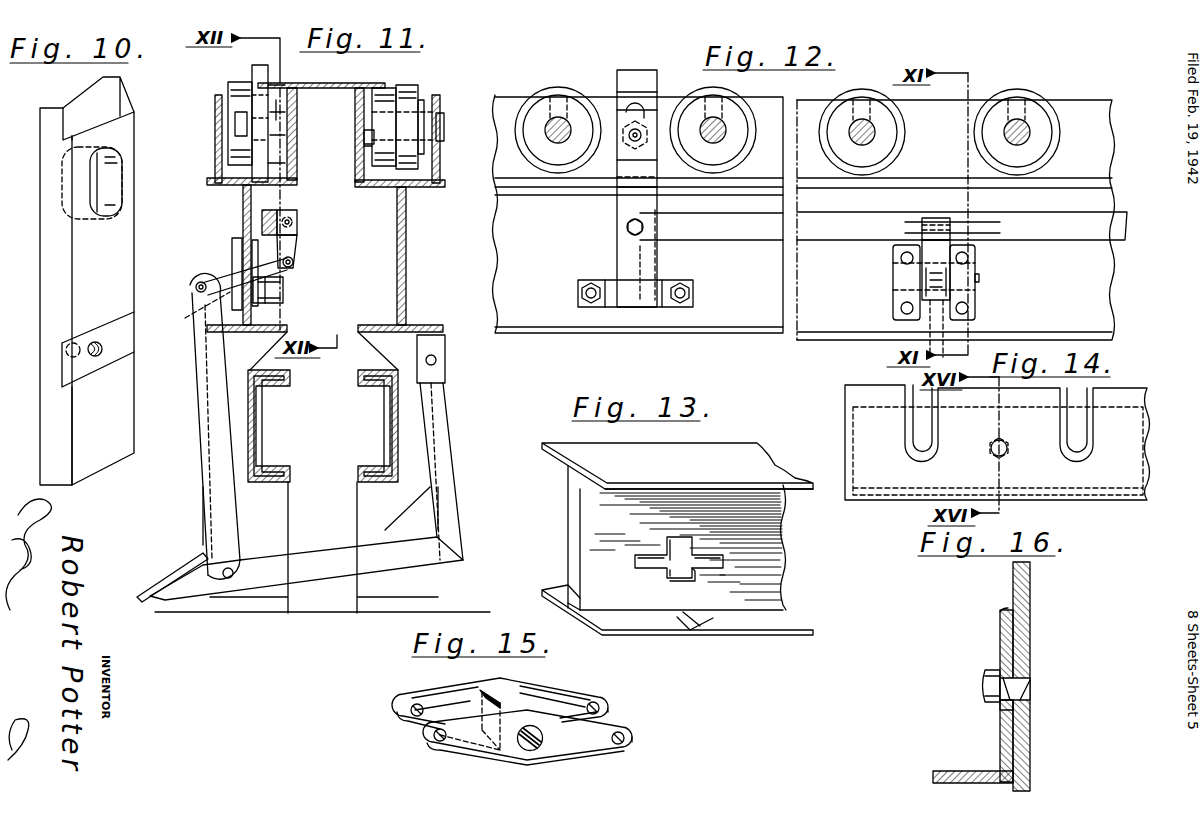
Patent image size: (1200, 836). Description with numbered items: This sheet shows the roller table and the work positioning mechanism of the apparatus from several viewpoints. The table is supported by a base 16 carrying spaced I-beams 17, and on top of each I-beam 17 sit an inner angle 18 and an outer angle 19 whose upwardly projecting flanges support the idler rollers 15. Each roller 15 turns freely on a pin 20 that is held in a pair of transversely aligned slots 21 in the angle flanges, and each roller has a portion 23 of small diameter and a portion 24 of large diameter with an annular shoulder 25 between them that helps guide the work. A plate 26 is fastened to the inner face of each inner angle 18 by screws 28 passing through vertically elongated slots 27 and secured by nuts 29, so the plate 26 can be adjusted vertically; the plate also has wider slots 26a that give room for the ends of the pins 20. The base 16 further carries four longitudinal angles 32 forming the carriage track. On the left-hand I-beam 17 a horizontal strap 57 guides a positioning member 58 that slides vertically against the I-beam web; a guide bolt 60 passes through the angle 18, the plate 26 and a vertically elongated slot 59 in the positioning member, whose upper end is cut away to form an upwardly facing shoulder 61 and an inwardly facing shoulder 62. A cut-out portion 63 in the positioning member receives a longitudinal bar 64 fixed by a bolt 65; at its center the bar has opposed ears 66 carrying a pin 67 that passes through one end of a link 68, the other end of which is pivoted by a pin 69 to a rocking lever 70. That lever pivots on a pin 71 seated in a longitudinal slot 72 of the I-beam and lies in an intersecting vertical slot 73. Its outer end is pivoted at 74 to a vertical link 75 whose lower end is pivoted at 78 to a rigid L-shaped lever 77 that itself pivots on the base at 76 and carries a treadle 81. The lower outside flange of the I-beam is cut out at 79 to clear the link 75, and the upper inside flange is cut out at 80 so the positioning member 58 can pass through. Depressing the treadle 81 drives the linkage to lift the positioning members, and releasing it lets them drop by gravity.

In FIG. 11, the idler roller 15 is at (420, 88).
In FIG. 12, the idler roller 15 is at (1017, 95).
In FIG. 11, the base 16 is at (357, 510).
In FIG. 11, the I-beam 17 is at (243, 214).
In FIG. 12, the I-beam 17 is at (544, 255).
In FIG. 13, the I-beam 17 is at (775, 523).
In FIG. 11, the inner angle 18 is at (293, 181).
In FIG. 14, the inner angle 18 is at (1145, 410).
In FIG. 16, the inner angle 18 is at (1000, 755).
In FIG. 11, the outer angle 19 is at (215, 162).
In FIG. 12, the outer angle 19 is at (1070, 100).
In FIG. 11, the pin 20 is at (444, 127).
In FIG. 12, the pin 20 is at (787, 142).
In FIG. 14, the slot 21 is at (920, 418).
In FIG. 11, the portion of relatively small diameter 23 is at (388, 88).
In FIG. 12, the portion of relatively small diameter 23 is at (1052, 128).
In FIG. 11, the portion of relatively great diameter 24 is at (409, 85).
In FIG. 12, the portion of relatively great diameter 24 is at (1060, 146).
In FIG. 11, the annular shoulder 25 is at (415, 78).
In FIG. 12, the annular shoulder 25 is at (1050, 160).
In FIG. 11, the plate 26 is at (298, 101).
In FIG. 14, the plate 26 is at (847, 393).
In FIG. 16, the plate 26 is at (1030, 731).
In FIG. 14, the vertically elongated slot 26a is at (905, 438).
In FIG. 11, the vertically elongated slot 27 is at (355, 148).
In FIG. 14, the vertically elongated slot 27 is at (1008, 455).
In FIG. 16, the vertically elongated slot 27 is at (1005, 708).
In FIG. 11, the screw 28 is at (364, 136).
In FIG. 16, the screw 28 is at (1030, 686).
In FIG. 16, the nut 29 is at (984, 676).
In FIG. 11, the longitudinally extending angle 32 is at (388, 378).
In FIG. 11, the strap 57 is at (283, 294).
In FIG. 12, the strap 57 is at (652, 283).
In FIG. 10, the positioning member 58 is at (127, 217).
In FIG. 11, the positioning member 58 is at (243, 196).
In FIG. 12, the positioning member 58 is at (617, 262).
In FIG. 10, the vertically elongated slot 59 is at (118, 155).
In FIG. 11, the vertically elongated slot 59 is at (258, 75).
In FIG. 12, the vertically elongated slot 59 is at (628, 100).
In FIG. 12, the guide bolt 60 is at (641, 128).
In FIG. 10, the upwardly facing shoulder 61 is at (125, 107).
In FIG. 12, the upwardly facing shoulder 61 is at (636, 90).
In FIG. 10, the inwardly facing shoulder 62 is at (120, 92).
In FIG. 11, the inwardly facing shoulder 62 is at (265, 68).
In FIG. 12, the inwardly facing shoulder 62 is at (627, 70).
In FIG. 10, the cut-out portion 63 is at (118, 336).
In FIG. 12, the cut-out portion 63 is at (650, 240).
In FIG. 11, the bar 64 is at (273, 208).
In FIG. 12, the bar 64 is at (883, 226).
In FIG. 12, the bolt 65 is at (643, 223).
In FIG. 11, the ear 66 is at (297, 213).
In FIG. 12, the ear 66 is at (903, 226).
In FIG. 11, the pin 67 is at (292, 224).
In FIG. 12, the pin 67 is at (924, 224).
In FIG. 11, the link 68 is at (296, 243).
In FIG. 12, the link 68 is at (922, 250).
In FIG. 11, the pin 69 is at (293, 263).
In FIG. 11, the rocking lever 70 is at (224, 272).
In FIG. 12, the rocking lever 70 is at (922, 268).
In FIG. 15, the rocking lever 70 is at (516, 757).
In FIG. 11, the pin 71 is at (204, 426).
In FIG. 12, the pin 71 is at (980, 278).
In FIG. 15, the pin 71 is at (543, 738).
In FIG. 13, the longitudinally extending slot 72 is at (637, 560).
In FIG. 13, the vertically extending slot 73 is at (678, 578).
In FIG. 11, the pivot 74 is at (196, 288).
In FIG. 11, the link 75 is at (215, 473).
In FIG. 12, the link 75 is at (940, 348).
In FIG. 11, the pivot 76 is at (437, 360).
In FIG. 11, the L-shaped lever 77 is at (460, 530).
In FIG. 11, the pivot 78 is at (228, 580).
In FIG. 11, the cut-out 79 is at (226, 332).
In FIG. 13, the cut-out 79 is at (700, 632).
In FIG. 12, the cut-out 80 is at (617, 188).
In FIG. 11, the treadle 81 is at (168, 568).